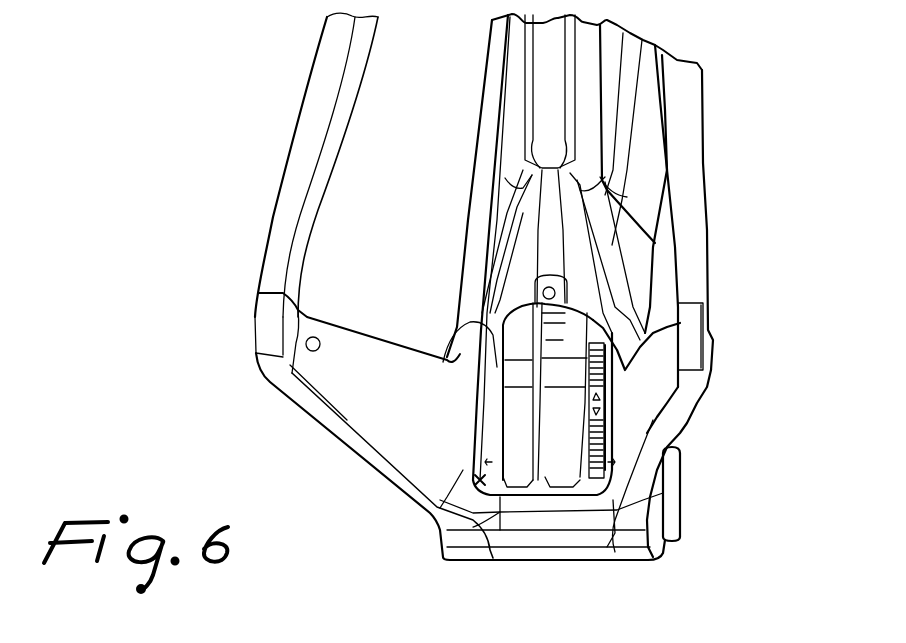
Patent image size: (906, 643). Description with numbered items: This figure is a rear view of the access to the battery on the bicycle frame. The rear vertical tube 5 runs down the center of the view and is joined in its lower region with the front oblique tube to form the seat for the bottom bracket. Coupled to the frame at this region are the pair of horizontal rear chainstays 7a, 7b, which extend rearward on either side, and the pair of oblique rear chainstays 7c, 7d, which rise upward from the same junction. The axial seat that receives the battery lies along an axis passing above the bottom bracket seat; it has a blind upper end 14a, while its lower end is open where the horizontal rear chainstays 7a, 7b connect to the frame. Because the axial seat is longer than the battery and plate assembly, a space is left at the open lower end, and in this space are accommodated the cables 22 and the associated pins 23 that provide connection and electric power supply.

The rear vertical tube 5 is at (543, 80).
The horizontal rear chainstay 7a is at (340, 397).
The horizontal rear chainstay 7b is at (653, 393).
The oblique rear chainstay 7c is at (313, 110).
The oblique rear chainstay 7d is at (692, 200).
The blind upper end 14a is at (435, 522).
The cables 22 is at (520, 497).
The pins 23 is at (573, 337).